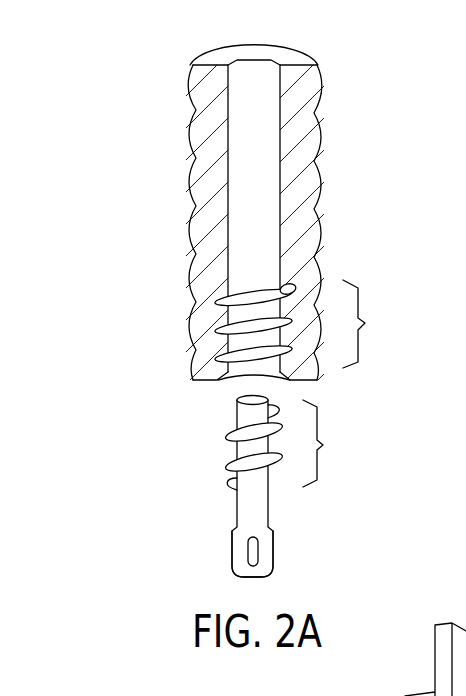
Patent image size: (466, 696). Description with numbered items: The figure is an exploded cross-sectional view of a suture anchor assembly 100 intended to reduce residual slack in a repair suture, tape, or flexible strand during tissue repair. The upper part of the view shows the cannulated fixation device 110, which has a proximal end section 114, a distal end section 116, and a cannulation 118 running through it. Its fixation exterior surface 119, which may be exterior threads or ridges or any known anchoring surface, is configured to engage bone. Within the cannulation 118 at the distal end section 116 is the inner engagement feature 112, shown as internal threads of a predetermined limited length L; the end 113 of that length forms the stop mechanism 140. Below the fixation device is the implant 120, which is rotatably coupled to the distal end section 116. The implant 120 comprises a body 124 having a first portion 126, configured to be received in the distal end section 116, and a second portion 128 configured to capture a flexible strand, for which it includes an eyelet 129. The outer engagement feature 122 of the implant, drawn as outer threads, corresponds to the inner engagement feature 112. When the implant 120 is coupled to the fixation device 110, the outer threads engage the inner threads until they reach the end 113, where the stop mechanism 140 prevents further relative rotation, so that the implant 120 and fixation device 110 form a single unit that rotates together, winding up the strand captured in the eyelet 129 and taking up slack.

The suture anchor assembly 100 is at (165, 56).
The cannulated fixation device 110 is at (330, 127).
The inner engagement feature 112 is at (285, 288).
The end of the inner threads 113 is at (238, 274).
The proximal end section 114 is at (228, 120).
The distal end section 116 is at (212, 350).
The cannulation 118 is at (271, 182).
The fixation exterior surface 119 is at (193, 168).
The implant 120 is at (220, 459).
The outer engagement feature 122 is at (244, 445).
The body 124 is at (233, 437).
The first portion 126 is at (238, 404).
The second portion 128 is at (273, 553).
The eyelet 129 is at (268, 556).
The stop mechanism 140 is at (262, 270).